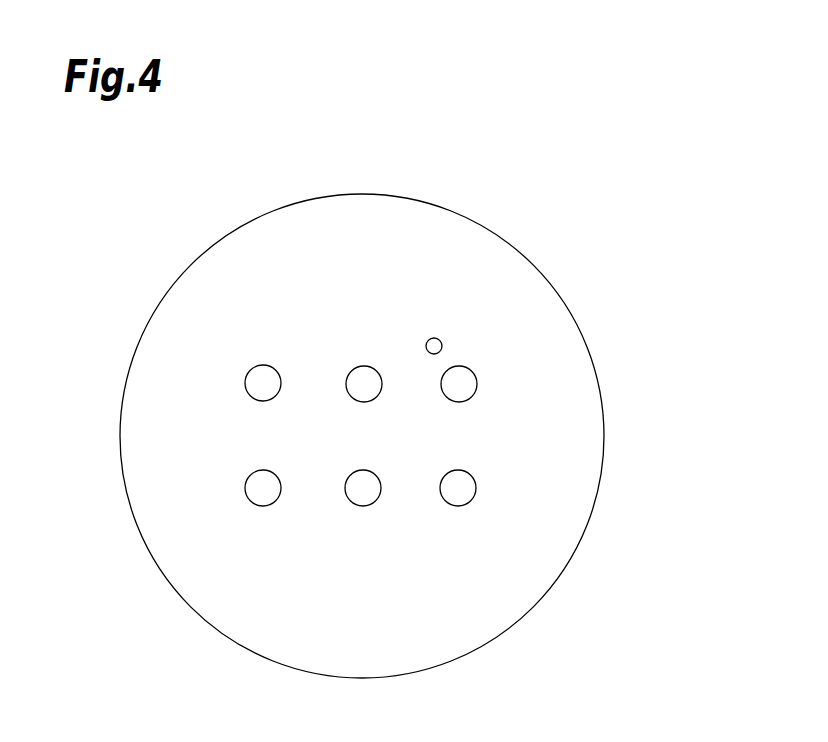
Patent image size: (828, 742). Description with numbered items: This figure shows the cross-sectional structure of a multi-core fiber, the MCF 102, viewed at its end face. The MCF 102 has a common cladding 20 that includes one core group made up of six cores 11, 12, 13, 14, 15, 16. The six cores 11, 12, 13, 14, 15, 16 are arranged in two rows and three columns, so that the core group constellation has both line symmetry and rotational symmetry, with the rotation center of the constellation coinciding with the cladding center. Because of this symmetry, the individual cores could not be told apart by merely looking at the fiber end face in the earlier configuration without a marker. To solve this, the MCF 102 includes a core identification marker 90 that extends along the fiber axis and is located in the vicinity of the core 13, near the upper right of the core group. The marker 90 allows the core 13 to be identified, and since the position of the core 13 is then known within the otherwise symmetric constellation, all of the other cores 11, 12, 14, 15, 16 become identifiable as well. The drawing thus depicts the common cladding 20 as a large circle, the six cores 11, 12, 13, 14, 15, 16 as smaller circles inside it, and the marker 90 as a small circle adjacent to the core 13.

The MCF 102 is at (603, 197).
The common cladding 20 is at (598, 440).
The core 11 is at (263, 365).
The core 12 is at (363, 366).
The core 13 is at (470, 369).
The core 14 is at (262, 506).
The core 15 is at (362, 506).
The core 16 is at (459, 506).
The core identification marker 90 is at (434, 338).